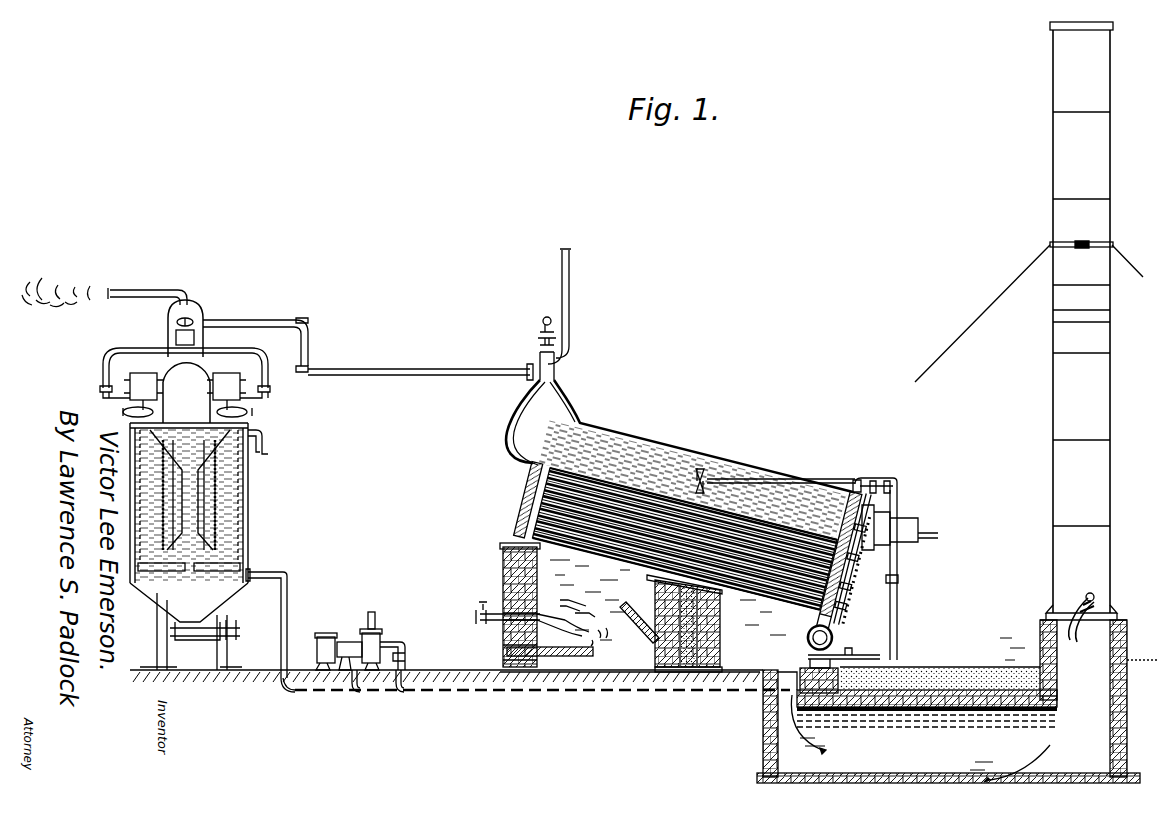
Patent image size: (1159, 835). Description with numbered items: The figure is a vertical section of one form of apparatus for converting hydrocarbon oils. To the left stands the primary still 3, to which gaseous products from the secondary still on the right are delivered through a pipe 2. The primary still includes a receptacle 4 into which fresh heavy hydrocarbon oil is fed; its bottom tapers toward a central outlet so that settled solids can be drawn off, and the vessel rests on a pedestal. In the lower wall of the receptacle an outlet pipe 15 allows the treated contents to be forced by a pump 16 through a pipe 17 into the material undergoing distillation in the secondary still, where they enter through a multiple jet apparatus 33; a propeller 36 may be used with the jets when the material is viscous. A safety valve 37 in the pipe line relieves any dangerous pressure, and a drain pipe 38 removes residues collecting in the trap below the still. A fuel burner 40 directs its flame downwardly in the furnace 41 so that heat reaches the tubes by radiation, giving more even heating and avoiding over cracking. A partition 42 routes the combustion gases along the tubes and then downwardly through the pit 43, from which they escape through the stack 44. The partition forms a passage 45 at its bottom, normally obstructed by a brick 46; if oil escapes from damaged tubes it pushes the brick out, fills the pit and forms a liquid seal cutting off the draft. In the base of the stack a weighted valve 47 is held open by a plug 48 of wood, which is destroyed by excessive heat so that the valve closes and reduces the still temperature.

The pipe 2 is at (413, 377).
The primary still 3 is at (244, 413).
The receptacle 4 is at (250, 488).
The outlet pipe 15 is at (266, 574).
The pump 16 is at (372, 633).
The pipe 17 is at (468, 692).
The multiple jet apparatus 33 is at (858, 483).
The propeller 36 is at (706, 478).
The safety valve 37 is at (538, 343).
The drain pipe 38 is at (868, 657).
The fuel burner 40 is at (480, 616).
The furnace 41 is at (590, 599).
The partition 42 is at (713, 628).
The pit 43 is at (948, 710).
The stack 44 is at (1058, 492).
The passage 45 is at (661, 674).
The brick 46 is at (722, 669).
The weighted valve 47 is at (1075, 633).
The plug 48 is at (1080, 604).